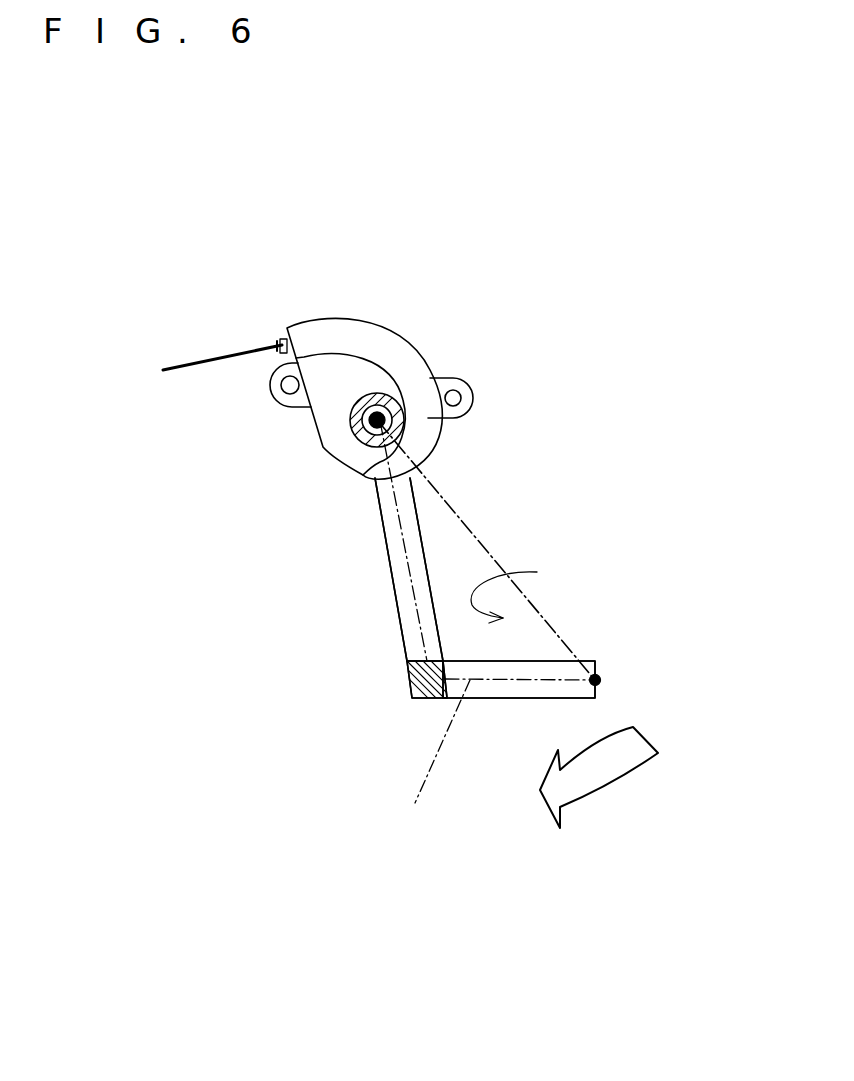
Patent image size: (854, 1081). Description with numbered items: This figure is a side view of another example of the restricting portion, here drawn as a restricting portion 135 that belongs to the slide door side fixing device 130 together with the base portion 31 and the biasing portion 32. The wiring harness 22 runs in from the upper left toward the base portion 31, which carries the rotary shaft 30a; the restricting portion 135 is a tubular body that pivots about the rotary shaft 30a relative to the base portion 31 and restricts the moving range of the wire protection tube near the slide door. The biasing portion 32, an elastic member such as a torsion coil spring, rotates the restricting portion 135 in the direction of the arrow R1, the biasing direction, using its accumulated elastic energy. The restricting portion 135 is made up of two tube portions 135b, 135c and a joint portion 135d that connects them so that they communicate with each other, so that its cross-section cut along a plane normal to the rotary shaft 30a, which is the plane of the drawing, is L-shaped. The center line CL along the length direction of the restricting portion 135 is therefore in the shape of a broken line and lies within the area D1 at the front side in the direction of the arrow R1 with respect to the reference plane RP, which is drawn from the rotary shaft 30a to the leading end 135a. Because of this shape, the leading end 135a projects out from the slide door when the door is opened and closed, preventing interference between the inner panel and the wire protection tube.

The wiring harness 22 is at (220, 353).
The base portion 31 is at (312, 425).
The biasing portion 32 is at (357, 430).
The rotary shaft 30a is at (375, 425).
The pivot assembly 130 is at (353, 743).
The restricting portion 135 is at (400, 617).
The leading end 135a is at (603, 678).
The tube portion 135b is at (383, 537).
The tube portion 135c is at (562, 700).
The joint portion 135d is at (420, 697).
The reference plane RP is at (483, 540).
The center line CL is at (434, 762).
The area D1 is at (517, 588).
The arrow (biasing direction) R1 is at (605, 767).